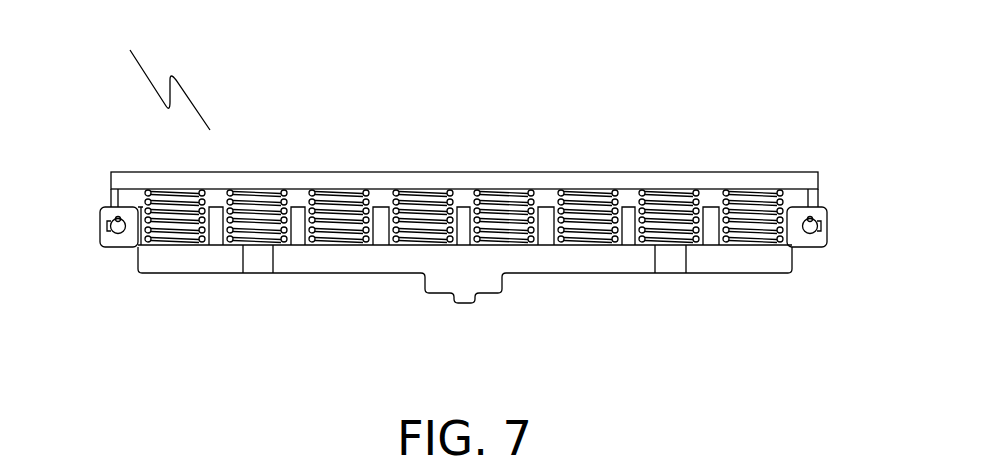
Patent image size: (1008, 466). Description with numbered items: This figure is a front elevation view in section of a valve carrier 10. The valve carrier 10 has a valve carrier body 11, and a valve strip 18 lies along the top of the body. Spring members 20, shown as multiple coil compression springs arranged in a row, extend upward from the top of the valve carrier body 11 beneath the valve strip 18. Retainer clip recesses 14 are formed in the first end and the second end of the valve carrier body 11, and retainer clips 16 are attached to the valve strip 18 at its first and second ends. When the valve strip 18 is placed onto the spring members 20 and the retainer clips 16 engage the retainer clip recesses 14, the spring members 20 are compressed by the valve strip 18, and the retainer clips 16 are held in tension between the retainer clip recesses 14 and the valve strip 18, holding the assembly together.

The valve carrier 10 is at (156, 74).
The valve carrier body 11 is at (476, 278).
The retainer clip recesses 14 is at (121, 229).
The retainer clips 16 is at (812, 196).
The valve strip 18 is at (561, 176).
The spring members 20 is at (413, 226).